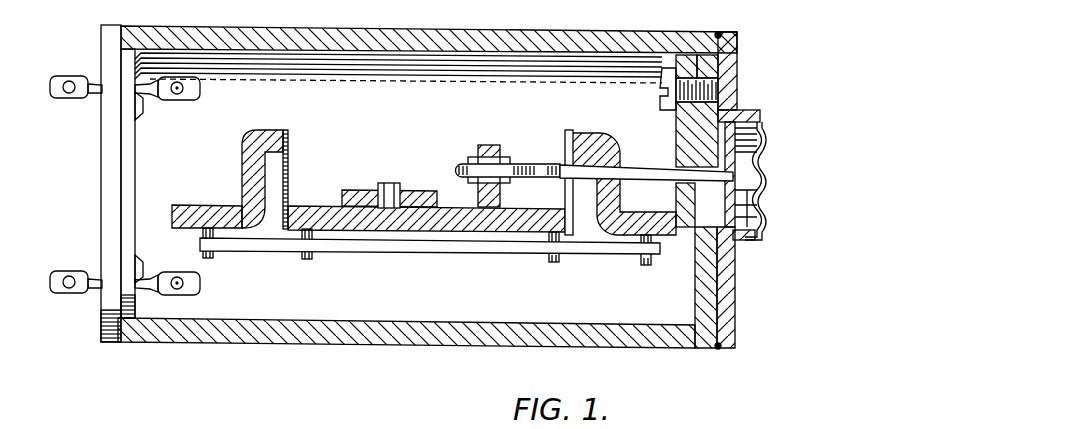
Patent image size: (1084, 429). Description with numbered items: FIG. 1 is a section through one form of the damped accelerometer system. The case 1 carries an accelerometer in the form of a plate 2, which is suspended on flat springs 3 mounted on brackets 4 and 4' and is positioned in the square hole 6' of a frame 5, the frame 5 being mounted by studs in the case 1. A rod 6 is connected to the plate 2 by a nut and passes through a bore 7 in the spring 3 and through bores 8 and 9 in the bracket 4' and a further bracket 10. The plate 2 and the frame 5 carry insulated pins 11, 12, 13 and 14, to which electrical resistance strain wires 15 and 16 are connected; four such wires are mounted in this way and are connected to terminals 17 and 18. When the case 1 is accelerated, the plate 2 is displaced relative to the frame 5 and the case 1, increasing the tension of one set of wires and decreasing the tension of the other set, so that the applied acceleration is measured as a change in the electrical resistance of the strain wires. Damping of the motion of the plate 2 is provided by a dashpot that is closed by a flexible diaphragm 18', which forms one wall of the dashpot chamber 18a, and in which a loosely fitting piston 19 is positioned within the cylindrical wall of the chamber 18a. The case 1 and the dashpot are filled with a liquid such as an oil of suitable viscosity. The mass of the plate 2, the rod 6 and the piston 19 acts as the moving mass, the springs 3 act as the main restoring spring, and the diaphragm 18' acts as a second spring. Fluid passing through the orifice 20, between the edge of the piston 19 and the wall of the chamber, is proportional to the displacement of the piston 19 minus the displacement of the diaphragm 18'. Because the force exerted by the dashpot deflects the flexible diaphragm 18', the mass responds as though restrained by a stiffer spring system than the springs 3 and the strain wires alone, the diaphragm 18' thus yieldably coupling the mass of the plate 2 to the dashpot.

The case 1 is at (396, 352).
The plate 2 is at (326, 210).
The flat springs 3 is at (289, 172).
The bracket 4 is at (256, 164).
The bracket 4' is at (605, 121).
The frame 5 is at (205, 204).
The rod 6 is at (508, 159).
The square hole 6' is at (260, 247).
The bore 7 is at (563, 168).
The bore 8 is at (623, 167).
The bore 9 is at (670, 178).
The bracket 10 is at (684, 120).
The insulated pin 11 is at (210, 262).
The insulated pin 12 is at (644, 266).
The insulated pin 13 is at (306, 263).
The insulated pin 14 is at (552, 264).
The electrical resistance strain wire 15 is at (286, 233).
The electrical resistance strain wire 16 is at (458, 257).
The terminal 17 is at (178, 102).
The terminal 18 is at (167, 323).
The flexible diaphragm 18' is at (760, 175).
The dashpot chamber 18a is at (748, 240).
The piston 19 is at (735, 188).
The orifice 20 is at (748, 216).